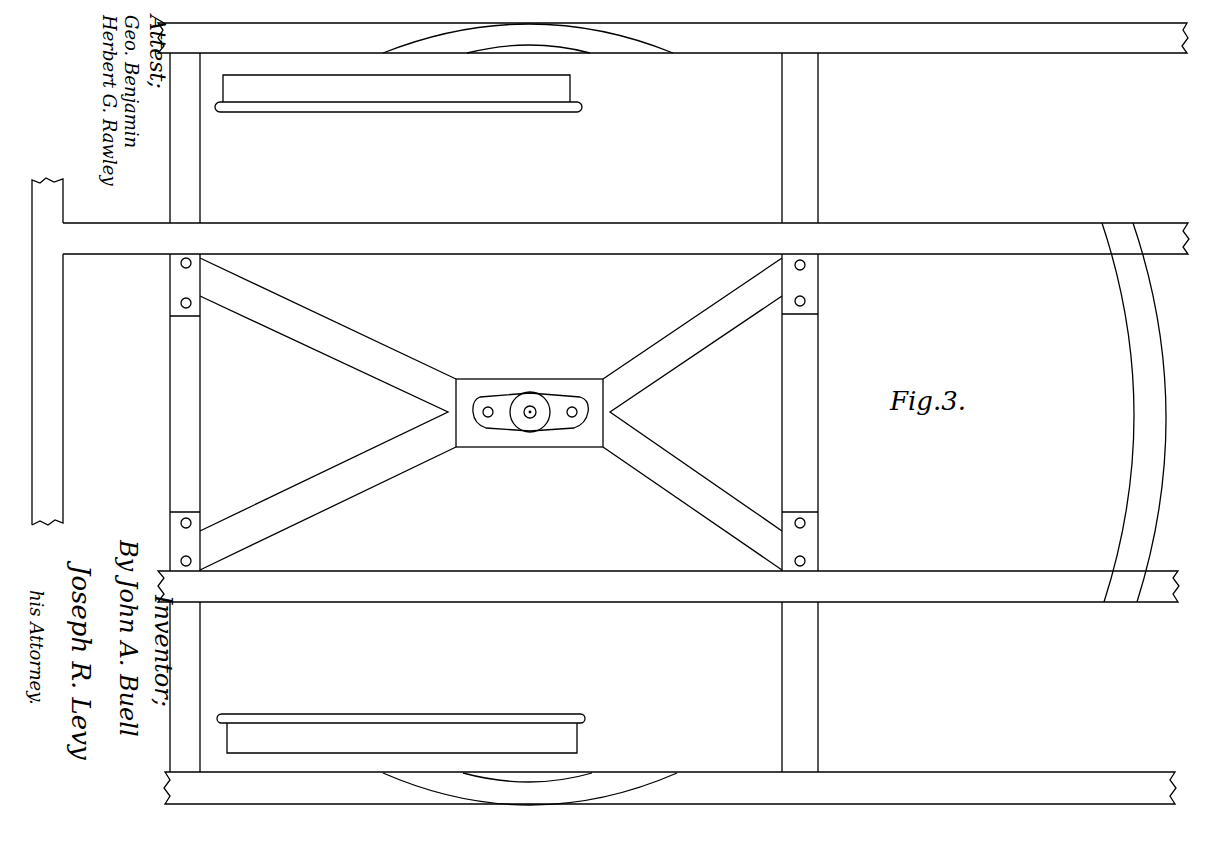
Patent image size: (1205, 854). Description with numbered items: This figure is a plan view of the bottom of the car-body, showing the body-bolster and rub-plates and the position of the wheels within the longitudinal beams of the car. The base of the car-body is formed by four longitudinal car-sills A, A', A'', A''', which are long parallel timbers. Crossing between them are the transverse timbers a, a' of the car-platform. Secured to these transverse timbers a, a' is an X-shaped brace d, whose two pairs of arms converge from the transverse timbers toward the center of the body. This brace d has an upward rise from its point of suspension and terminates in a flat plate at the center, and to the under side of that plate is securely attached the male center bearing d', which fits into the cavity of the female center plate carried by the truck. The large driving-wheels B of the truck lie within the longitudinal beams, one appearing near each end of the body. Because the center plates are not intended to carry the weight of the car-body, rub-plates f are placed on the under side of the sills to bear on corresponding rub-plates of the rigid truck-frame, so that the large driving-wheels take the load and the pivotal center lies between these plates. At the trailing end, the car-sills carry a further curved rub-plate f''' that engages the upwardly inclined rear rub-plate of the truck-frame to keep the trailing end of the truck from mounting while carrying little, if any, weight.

The longitudinal car-sill A is at (673, 38).
The longitudinal car-sill A' is at (626, 238).
The longitudinal car-sill A'' is at (668, 586).
The longitudinal car-sill A''' is at (670, 788).
The large driving-wheel B is at (400, 414).
The transverse timber a is at (198, 412).
The transverse timber a' is at (818, 412).
The X-shaped brace d is at (491, 414).
The male center bearing d' is at (530, 433).
The rub-plate f is at (530, 414).
The rub-plate f''' is at (1130, 412).